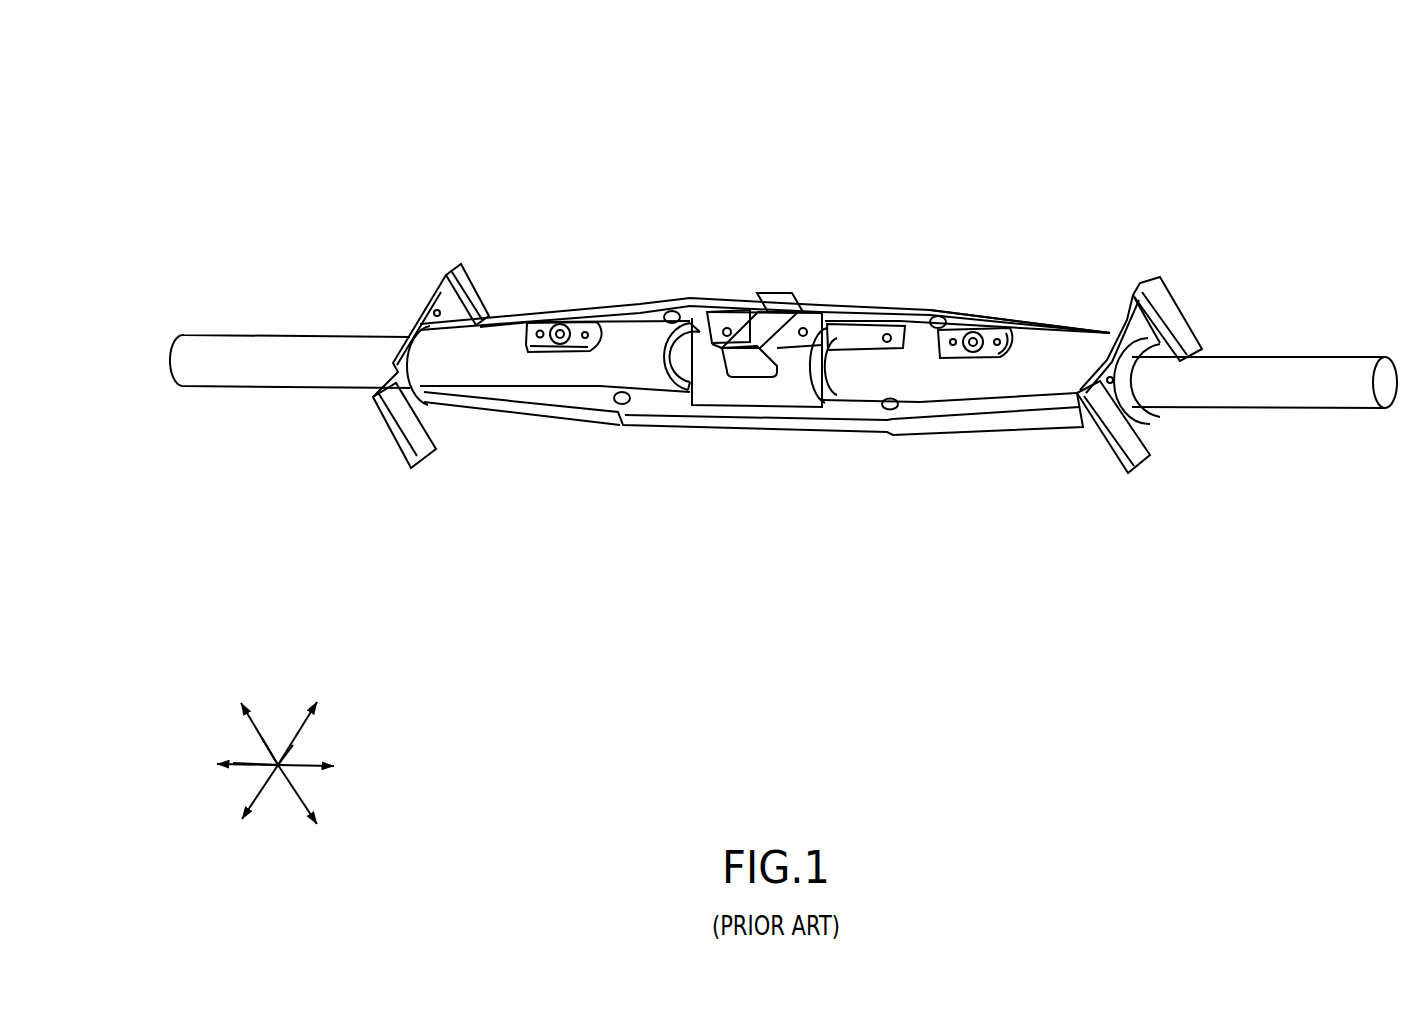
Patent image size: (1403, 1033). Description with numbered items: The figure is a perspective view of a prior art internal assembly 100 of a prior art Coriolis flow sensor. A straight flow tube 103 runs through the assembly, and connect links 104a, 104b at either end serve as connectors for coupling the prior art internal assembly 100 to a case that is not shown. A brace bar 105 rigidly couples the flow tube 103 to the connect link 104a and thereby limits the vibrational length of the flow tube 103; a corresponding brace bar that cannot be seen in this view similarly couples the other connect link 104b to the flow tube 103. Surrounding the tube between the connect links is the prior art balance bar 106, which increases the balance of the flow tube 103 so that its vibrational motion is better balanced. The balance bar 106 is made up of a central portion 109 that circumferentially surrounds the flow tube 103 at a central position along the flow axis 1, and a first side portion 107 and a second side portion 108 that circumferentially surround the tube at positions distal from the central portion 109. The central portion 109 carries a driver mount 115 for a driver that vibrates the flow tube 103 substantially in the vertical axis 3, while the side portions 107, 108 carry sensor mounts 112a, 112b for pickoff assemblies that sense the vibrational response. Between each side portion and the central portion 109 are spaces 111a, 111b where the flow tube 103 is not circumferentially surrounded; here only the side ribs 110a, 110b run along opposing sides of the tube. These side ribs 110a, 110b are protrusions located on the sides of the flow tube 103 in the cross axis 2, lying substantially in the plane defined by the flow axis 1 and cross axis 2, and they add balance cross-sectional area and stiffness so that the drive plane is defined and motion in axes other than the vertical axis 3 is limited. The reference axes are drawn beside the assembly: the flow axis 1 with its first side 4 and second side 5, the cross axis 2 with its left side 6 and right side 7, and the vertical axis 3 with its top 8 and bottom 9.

The prior art internal assembly 100 is at (1140, 120).
The flow tube 103 is at (1268, 377).
The connect link 104a is at (1098, 461).
The connect link 104b is at (397, 448).
The brace bar 105 is at (1145, 413).
The balance bar 106 is at (665, 292).
The first side portion 107 is at (490, 360).
The second side portion 108 is at (923, 367).
The central portion 109 is at (787, 370).
The side rib 110a is at (636, 425).
The side rib 110b is at (993, 313).
The space 111a is at (693, 336).
The space 111b is at (855, 340).
The sensor mount 112a is at (972, 338).
The sensor mount 112b is at (558, 322).
The driver mount 115 is at (777, 322).
The flow axis 1 is at (257, 773).
The cross axis 2 is at (293, 745).
The vertical axis 3 is at (262, 738).
The first side 4 is at (233, 763).
The second side 5 is at (337, 767).
The left side 6 is at (313, 708).
The right side 7 is at (242, 822).
The top 8 is at (244, 708).
The bottom 9 is at (310, 820).